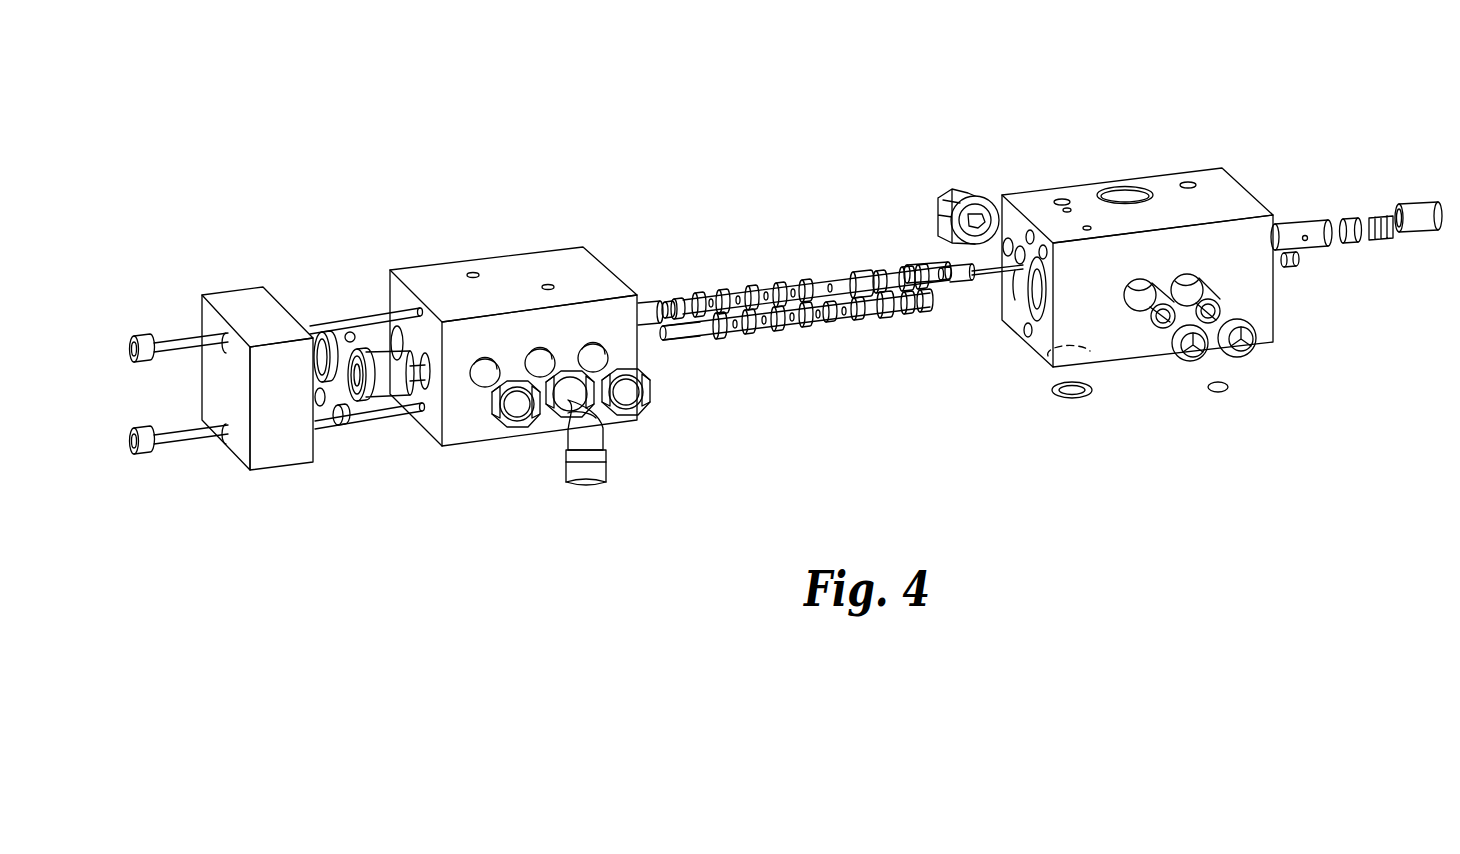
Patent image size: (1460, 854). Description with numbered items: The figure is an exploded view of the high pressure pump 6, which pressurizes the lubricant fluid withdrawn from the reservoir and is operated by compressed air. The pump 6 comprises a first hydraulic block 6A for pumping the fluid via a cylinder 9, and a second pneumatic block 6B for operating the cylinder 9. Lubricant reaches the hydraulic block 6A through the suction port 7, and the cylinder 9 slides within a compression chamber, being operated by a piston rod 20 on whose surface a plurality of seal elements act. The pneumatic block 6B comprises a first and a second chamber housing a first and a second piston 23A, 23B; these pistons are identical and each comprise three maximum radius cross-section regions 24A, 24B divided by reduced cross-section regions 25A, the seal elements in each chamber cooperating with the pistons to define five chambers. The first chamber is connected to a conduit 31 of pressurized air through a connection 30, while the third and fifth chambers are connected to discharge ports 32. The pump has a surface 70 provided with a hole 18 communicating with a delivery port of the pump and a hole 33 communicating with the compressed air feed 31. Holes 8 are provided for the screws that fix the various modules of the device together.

The high pressure pump 6 is at (1302, 121).
The first hydraulic block 6A is at (1017, 198).
The second pneumatic block 6B is at (202, 275).
The suction port 7 is at (1118, 188).
The holes 8 is at (1060, 198).
The cylinder 9 is at (927, 269).
The hole 18 is at (1217, 360).
The piston rod 20 is at (893, 267).
The first piston 23A is at (679, 350).
The second piston 23B is at (638, 298).
The maximum radius cross-section region 24A is at (650, 302).
The maximum radius cross-section region 24B is at (680, 304).
The reduced cross-section region 25A is at (667, 303).
The connection 30 is at (588, 400).
The conduit of pressurized air 31 is at (600, 462).
The discharge ports 32 is at (518, 415).
The hole 33 is at (1090, 351).
The surface 70 is at (1270, 350).